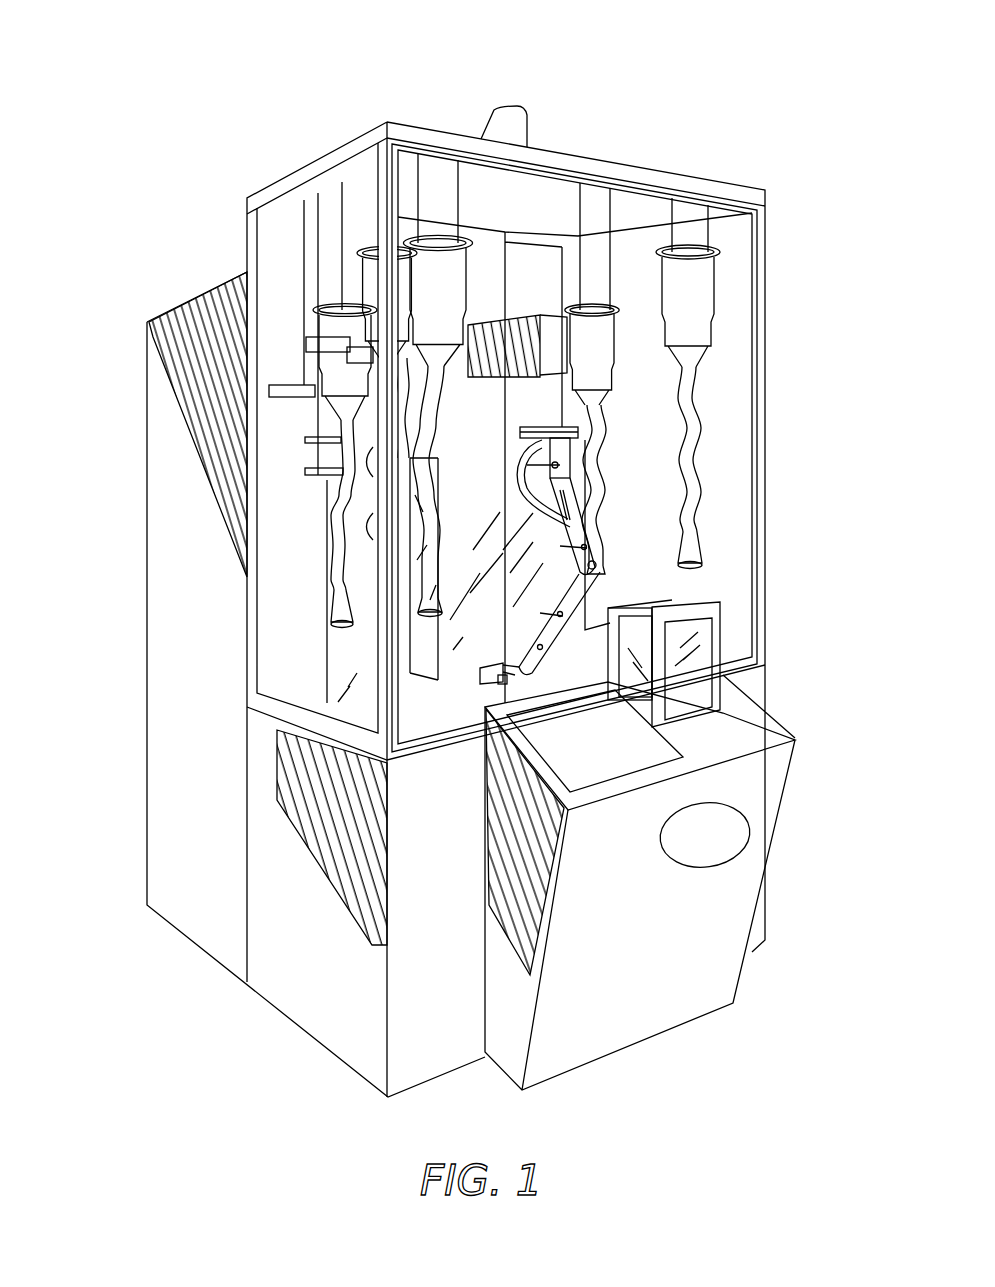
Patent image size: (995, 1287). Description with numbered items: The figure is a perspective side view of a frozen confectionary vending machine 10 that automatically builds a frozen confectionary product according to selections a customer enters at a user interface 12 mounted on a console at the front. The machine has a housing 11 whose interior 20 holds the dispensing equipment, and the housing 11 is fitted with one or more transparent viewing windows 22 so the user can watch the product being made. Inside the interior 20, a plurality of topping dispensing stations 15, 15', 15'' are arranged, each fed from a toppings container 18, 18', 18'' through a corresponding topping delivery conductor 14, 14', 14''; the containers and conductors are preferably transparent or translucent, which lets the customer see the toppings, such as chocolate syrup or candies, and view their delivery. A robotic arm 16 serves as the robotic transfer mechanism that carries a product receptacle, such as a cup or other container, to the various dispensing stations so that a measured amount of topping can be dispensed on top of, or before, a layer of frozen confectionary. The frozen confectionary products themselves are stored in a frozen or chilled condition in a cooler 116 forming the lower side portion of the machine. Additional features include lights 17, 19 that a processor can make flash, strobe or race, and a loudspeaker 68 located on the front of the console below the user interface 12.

The frozen confectionary vending machine 10 is at (193, 189).
The housing 11 is at (403, 120).
The user interface 12 is at (607, 750).
The topping delivery conductor 14 is at (776, 449).
The topping delivery conductor 14' is at (248, 482).
The topping delivery conductor 14'' is at (203, 505).
The topping dispensing station 15 is at (776, 566).
The topping dispensing station 15' is at (247, 659).
The topping dispensing station 15'' is at (202, 622).
The robotic arm 16 is at (585, 583).
The light 17 is at (525, 108).
The toppings container 18 is at (765, 282).
The toppings container 18' is at (215, 328).
The toppings container 18'' is at (548, 211).
The light 19 is at (756, 214).
The interior 20 is at (532, 217).
The transparent viewing window 22 is at (622, 208).
The loudspeaker 68 is at (728, 848).
The cooler 116 is at (218, 620).